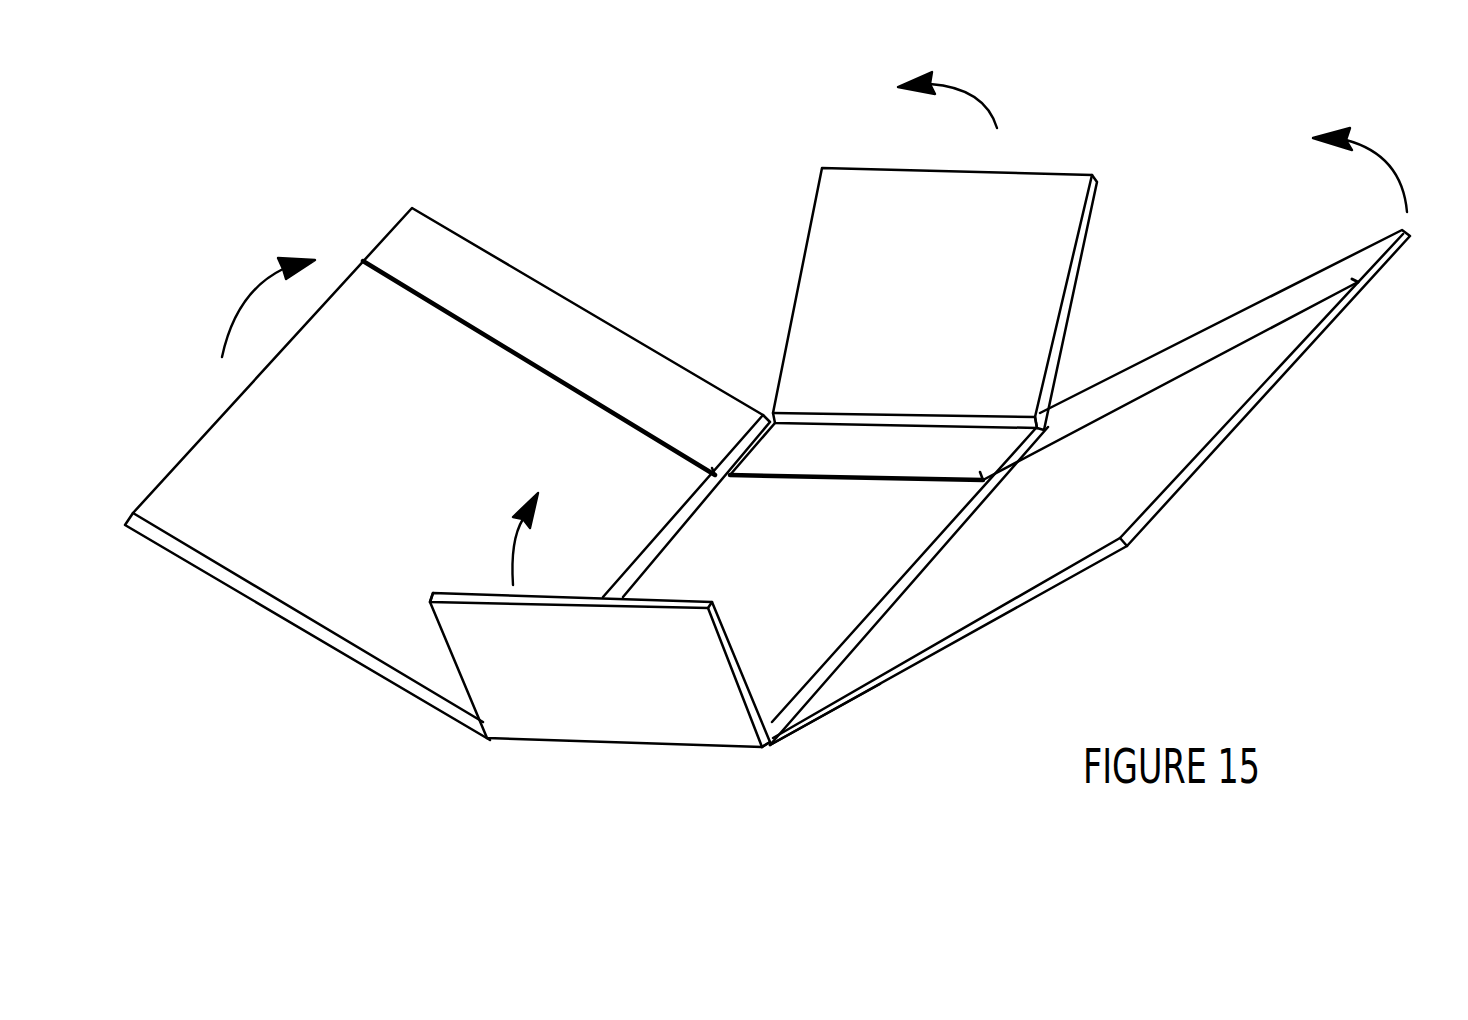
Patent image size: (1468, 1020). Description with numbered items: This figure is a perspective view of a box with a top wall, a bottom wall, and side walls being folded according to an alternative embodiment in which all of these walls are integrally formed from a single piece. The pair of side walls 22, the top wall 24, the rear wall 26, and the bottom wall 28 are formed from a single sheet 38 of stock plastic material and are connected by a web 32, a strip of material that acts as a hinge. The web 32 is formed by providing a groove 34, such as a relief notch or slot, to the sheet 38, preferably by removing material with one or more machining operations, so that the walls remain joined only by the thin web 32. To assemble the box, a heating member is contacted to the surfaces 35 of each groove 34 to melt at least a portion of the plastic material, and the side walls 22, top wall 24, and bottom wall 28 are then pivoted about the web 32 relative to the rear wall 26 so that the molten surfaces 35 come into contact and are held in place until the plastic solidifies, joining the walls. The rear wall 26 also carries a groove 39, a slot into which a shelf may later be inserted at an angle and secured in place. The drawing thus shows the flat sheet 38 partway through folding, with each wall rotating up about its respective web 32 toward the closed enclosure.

The side wall 22 is at (372, 478).
The top wall 24 is at (927, 293).
The rear wall 26 is at (764, 587).
The bottom wall 28 is at (575, 695).
The web 32 is at (770, 746).
The groove 34 is at (838, 418).
The surfaces of the groove 35 is at (930, 547).
The sheet 38 is at (886, 731).
The groove 39 is at (520, 348).